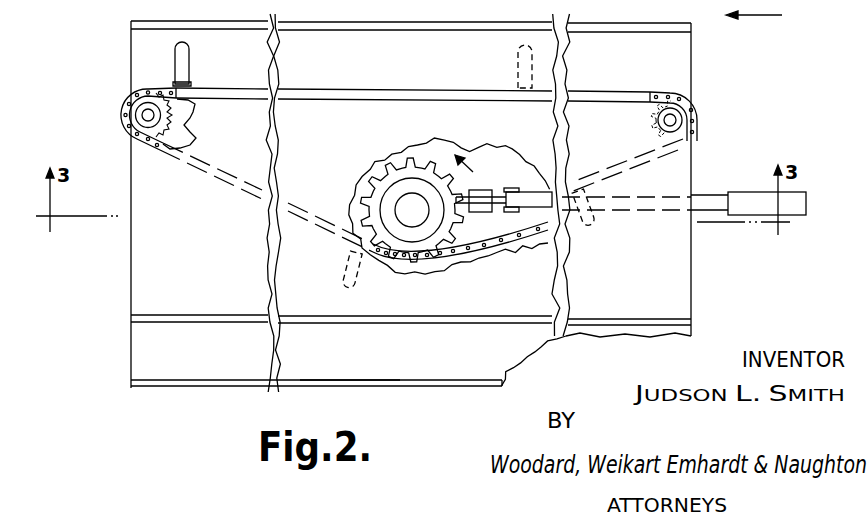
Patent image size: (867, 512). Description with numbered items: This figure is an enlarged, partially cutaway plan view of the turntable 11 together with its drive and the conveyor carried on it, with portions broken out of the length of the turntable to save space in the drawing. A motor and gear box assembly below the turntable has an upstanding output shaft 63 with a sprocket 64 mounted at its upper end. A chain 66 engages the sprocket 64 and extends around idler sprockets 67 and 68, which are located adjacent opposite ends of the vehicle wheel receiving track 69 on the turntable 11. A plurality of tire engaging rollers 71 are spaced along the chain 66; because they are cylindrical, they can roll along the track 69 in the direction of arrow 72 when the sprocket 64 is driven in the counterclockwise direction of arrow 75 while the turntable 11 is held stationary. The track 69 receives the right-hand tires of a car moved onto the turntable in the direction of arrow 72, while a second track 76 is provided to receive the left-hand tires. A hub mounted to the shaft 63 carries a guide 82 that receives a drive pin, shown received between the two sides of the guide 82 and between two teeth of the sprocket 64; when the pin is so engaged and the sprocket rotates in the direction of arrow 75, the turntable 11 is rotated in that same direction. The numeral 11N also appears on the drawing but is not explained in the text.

The turntable 11 is at (679, 176).
The drive shaft 11N is at (691, 277).
The output shaft 63 is at (406, 217).
The sprocket 64 is at (415, 163).
The chain 66 is at (499, 252).
The idler sprocket 67 is at (133, 114).
The idler sprocket 68 is at (686, 120).
The vehicle wheel receiving track 69 is at (680, 70).
The tire engaging rollers 71 is at (185, 62).
The arrow 72 is at (772, 15).
The arrow 75 is at (473, 172).
The track 76 is at (422, 370).
The guide 82 is at (480, 212).